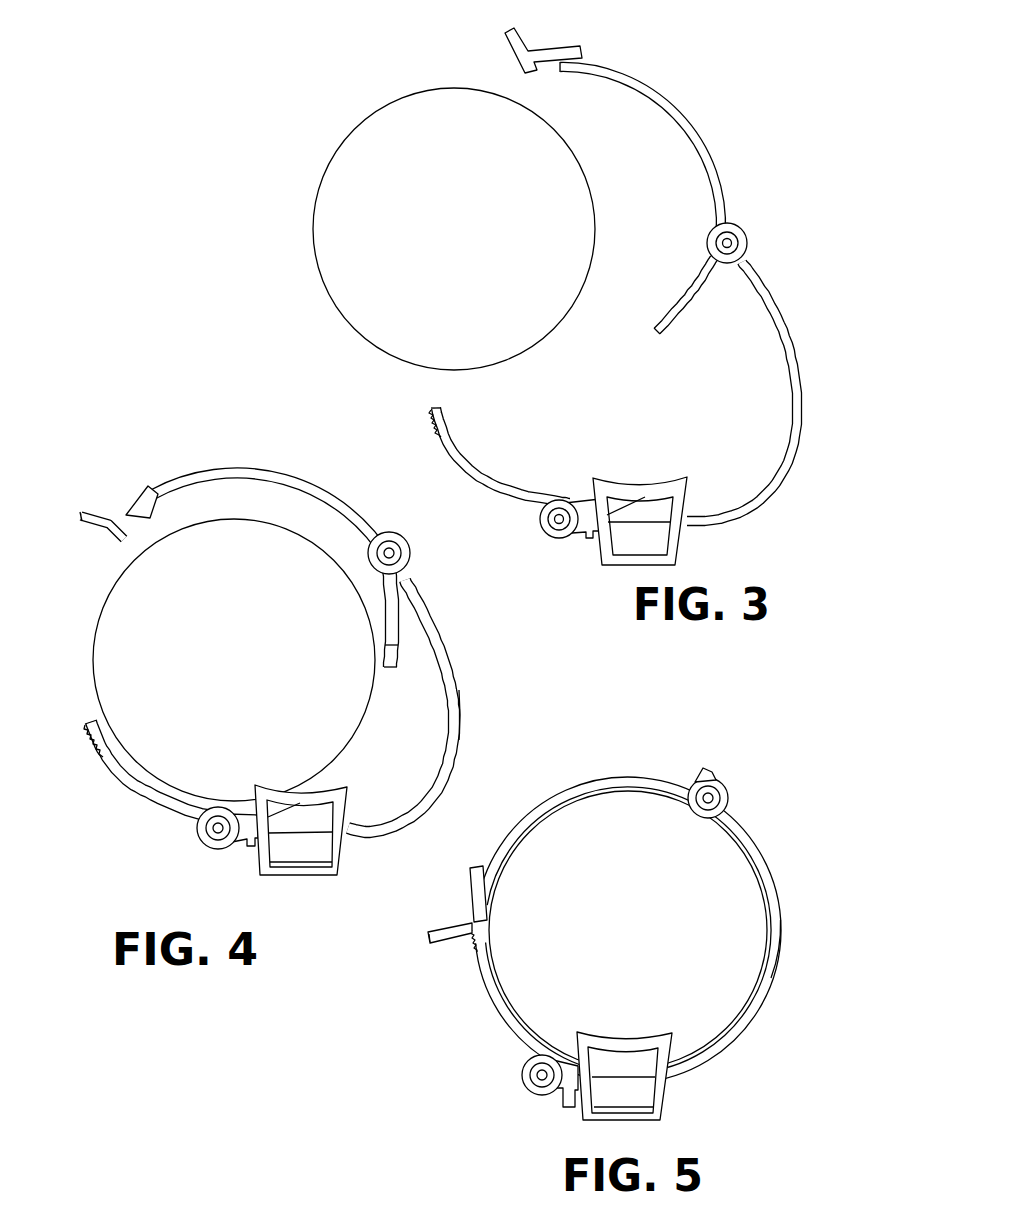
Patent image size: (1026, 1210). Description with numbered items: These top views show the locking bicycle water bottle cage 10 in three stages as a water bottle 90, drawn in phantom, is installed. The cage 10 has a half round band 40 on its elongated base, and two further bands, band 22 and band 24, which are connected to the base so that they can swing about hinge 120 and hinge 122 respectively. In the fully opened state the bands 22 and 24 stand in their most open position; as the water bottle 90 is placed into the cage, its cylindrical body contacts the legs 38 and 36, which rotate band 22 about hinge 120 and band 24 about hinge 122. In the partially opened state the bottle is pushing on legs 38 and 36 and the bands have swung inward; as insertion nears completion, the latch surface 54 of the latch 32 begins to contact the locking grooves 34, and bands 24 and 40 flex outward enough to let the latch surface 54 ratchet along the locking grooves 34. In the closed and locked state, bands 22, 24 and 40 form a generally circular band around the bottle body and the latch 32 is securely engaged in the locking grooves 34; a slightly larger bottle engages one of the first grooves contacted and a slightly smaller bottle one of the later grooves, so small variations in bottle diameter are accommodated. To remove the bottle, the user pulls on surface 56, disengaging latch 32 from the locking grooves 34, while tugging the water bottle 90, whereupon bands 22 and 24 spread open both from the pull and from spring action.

In FIG. 3, the locking bicycle water bottle cage 10 is at (800, 177).
In FIG. 4, the locking bicycle water bottle cage 10 is at (498, 658).
In FIG. 5, the locking bicycle water bottle cage 10 is at (808, 843).
In FIG. 3, the band 22 is at (495, 483).
In FIG. 4, the band 22 is at (150, 795).
In FIG. 5, the band 22 is at (502, 1020).
In FIG. 3, the band 24 is at (658, 92).
In FIG. 4, the band 24 is at (247, 470).
In FIG. 5, the band 24 is at (578, 793).
In FIG. 3, the latch 32 is at (543, 50).
In FIG. 4, the latch 32 is at (122, 513).
In FIG. 5, the latch 32 is at (470, 907).
In FIG. 4, the locking grooves 34 is at (92, 743).
In FIG. 5, the locking grooves 34 is at (473, 955).
In FIG. 3, the leg 36 is at (678, 310).
In FIG. 4, the leg 36 is at (393, 620).
In FIG. 3, the leg 38 is at (578, 500).
In FIG. 4, the leg 38 is at (245, 813).
In FIG. 5, the leg 38 is at (624, 1076).
In FIG. 4, the half round band 40 is at (449, 722).
In FIG. 5, the half round band 40 is at (782, 920).
In FIG. 4, the latch surface 54 is at (125, 538).
In FIG. 5, the latch surface 54 is at (477, 923).
In FIG. 5, the surface 56 is at (433, 942).
In FIG. 3, the water bottle 90 is at (325, 165).
In FIG. 4, the water bottle 90 is at (92, 652).
In FIG. 5, the water bottle 90 is at (503, 877).
In FIG. 3, the hinge 120 is at (559, 536).
In FIG. 4, the hinge 120 is at (212, 847).
In FIG. 5, the hinge 120 is at (550, 1081).
In FIG. 3, the hinge 122 is at (742, 257).
In FIG. 4, the hinge 122 is at (403, 560).
In FIG. 5, the hinge 122 is at (708, 793).